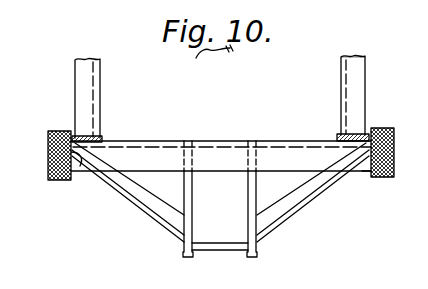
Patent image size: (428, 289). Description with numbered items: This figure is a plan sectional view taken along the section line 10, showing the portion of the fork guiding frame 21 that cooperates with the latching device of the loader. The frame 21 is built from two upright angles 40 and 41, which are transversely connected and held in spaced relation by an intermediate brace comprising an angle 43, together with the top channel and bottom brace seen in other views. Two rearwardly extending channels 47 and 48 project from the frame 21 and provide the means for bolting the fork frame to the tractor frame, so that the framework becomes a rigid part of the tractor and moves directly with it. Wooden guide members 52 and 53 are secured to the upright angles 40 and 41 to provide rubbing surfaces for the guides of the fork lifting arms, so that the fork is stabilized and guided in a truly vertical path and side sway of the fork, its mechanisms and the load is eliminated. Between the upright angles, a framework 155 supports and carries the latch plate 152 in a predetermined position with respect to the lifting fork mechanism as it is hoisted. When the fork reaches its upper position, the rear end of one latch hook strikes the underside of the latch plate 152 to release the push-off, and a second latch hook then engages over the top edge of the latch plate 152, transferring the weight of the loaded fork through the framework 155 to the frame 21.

The section line 10 is at (408, 288).
The frame 21 is at (366, 50).
The upright angle 40 is at (360, 171).
The upright angle 41 is at (80, 166).
The angle 43 is at (268, 154).
The rearwardly extending channel 47 is at (355, 72).
The rearwardly extending channel 48 is at (86, 88).
The wooden guide member 52 is at (386, 128).
The wooden guide member 53 is at (53, 130).
The latch plate 152 is at (234, 252).
The framework 155 is at (186, 211).